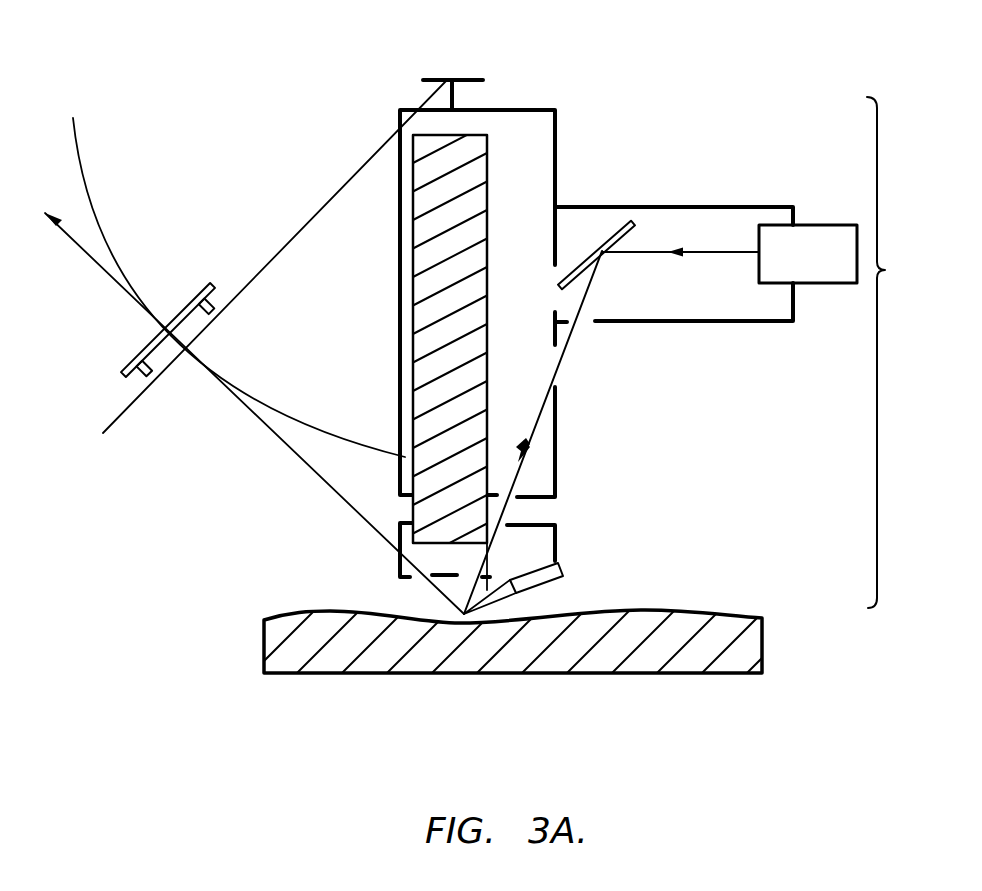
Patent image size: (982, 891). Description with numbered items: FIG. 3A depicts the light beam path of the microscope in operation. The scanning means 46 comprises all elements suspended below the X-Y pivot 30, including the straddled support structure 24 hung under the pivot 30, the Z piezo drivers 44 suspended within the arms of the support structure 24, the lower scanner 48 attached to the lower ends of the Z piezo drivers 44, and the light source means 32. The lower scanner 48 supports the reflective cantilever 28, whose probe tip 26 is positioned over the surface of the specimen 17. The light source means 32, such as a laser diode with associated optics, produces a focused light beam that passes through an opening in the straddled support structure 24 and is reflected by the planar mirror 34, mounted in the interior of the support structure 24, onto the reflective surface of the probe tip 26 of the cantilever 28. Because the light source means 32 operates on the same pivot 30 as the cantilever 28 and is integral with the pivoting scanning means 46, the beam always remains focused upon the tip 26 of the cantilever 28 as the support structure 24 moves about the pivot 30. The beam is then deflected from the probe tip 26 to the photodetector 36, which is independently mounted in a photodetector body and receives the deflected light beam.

The specimen 17 is at (743, 645).
The straddled support structure 24 is at (558, 156).
The probe tip 26 is at (466, 616).
The cantilever 28 is at (497, 555).
The X-Y pivot 30 is at (478, 80).
The light source means 32 is at (818, 225).
The planar mirror 34 is at (617, 226).
The photodetector 36 is at (163, 356).
The Z piezo drivers 44 is at (489, 450).
The scanning means 46 is at (895, 352).
The lower scanner 48 is at (557, 544).